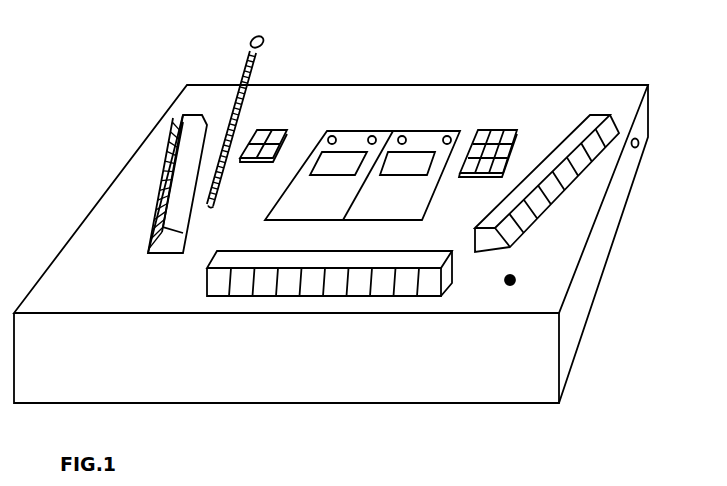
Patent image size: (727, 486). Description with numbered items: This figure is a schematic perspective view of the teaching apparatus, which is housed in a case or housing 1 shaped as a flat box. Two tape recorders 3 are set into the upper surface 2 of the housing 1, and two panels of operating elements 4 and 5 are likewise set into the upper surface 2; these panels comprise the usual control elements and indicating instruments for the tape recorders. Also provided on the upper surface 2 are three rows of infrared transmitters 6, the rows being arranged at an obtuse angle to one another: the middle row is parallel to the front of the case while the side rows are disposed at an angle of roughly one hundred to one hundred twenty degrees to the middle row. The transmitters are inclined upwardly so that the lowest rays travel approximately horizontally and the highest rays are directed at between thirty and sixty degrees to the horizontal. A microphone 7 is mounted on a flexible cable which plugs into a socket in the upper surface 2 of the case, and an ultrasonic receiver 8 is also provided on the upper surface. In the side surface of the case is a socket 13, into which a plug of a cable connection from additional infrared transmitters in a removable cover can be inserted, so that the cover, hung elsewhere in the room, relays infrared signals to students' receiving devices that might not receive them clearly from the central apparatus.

The case or housing 1 is at (201, 372).
The upper surface 2 is at (555, 262).
The tape recorders 3 is at (420, 142).
The panel of operating elements 4 is at (278, 143).
The panel of operating elements 5 is at (503, 166).
The infrared transmitters 6 is at (172, 160).
The microphone 7 is at (243, 63).
The ultrasonic receiver 8 is at (510, 287).
The socket 13 is at (638, 147).